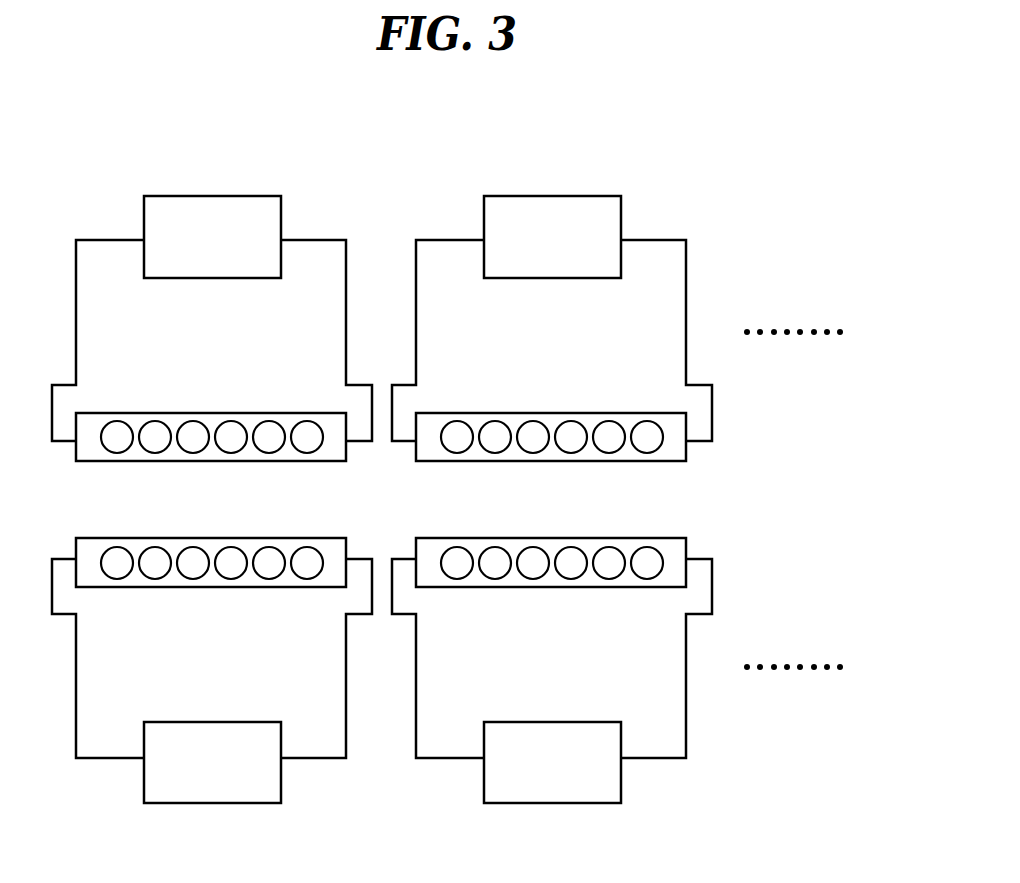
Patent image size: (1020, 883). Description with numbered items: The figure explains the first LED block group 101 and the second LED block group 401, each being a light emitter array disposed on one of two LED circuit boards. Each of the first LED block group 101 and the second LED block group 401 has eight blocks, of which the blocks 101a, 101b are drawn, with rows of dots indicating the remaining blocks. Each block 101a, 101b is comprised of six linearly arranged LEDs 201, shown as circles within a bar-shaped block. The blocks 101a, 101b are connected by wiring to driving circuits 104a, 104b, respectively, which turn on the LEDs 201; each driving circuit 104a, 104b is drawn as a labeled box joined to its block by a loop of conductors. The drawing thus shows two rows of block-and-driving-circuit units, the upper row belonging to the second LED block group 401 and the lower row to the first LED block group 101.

The driving circuit 104a is at (208, 196).
The driving circuit 104b is at (547, 195).
The second LED block group 401 is at (655, 222).
The first LED block group 101 is at (677, 787).
The block 101a is at (190, 462).
The block 101b is at (477, 462).
The LED 201 is at (118, 440).